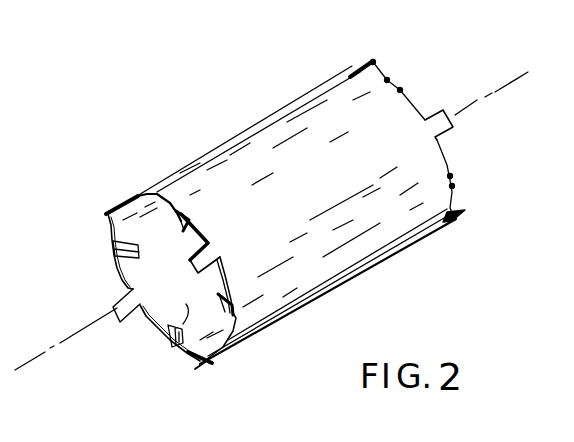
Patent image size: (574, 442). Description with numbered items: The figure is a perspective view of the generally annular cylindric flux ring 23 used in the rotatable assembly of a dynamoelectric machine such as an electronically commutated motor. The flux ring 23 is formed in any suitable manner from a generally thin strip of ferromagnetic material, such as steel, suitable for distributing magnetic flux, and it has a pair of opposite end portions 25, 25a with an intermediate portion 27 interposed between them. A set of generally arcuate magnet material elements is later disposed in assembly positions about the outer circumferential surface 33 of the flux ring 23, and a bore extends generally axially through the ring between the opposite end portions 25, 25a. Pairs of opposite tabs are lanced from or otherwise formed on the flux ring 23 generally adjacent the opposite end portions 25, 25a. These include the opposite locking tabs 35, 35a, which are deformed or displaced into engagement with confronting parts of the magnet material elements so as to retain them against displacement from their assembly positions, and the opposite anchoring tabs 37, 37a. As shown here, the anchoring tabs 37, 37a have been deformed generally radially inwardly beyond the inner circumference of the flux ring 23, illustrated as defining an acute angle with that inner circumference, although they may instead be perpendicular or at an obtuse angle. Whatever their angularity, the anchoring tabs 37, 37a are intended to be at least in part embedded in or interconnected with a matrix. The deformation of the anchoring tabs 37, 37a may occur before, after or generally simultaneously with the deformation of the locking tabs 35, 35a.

The flux ring 23 is at (470, 198).
The end portion 25 is at (151, 192).
The end portion 25a is at (351, 72).
The intermediate portion 27 is at (271, 118).
The outer circumferential surface 33 is at (390, 242).
The locking tab 35 is at (108, 211).
The locking tab 35a is at (372, 62).
The anchoring tab 37 is at (178, 231).
The anchoring tab 37a is at (388, 81).